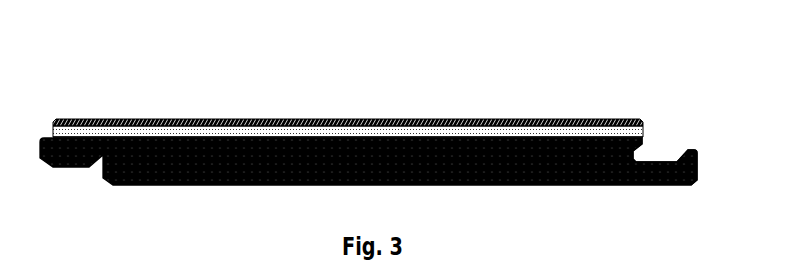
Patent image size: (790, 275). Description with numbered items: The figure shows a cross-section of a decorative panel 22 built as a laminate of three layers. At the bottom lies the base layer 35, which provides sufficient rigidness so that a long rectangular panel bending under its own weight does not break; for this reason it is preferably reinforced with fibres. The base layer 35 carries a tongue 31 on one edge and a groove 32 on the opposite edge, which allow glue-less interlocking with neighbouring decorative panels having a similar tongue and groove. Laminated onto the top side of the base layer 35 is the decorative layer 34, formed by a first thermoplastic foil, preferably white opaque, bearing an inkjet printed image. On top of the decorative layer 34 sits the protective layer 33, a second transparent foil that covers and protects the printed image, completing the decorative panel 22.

The decorative panel 22 is at (348, 79).
The tongue 31 is at (42, 168).
The groove 32 is at (655, 155).
The protective layer 33 is at (385, 118).
The decorative layer 34 is at (438, 132).
The base layer 35 is at (510, 143).